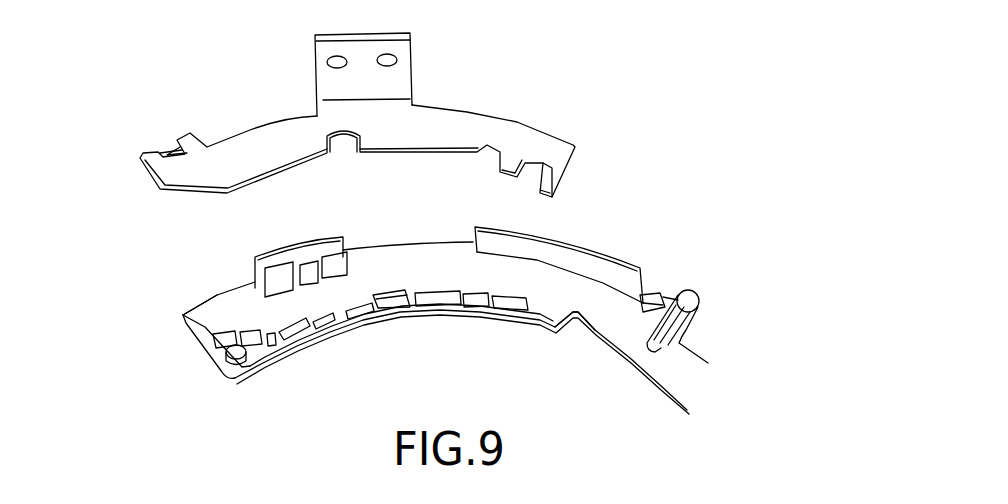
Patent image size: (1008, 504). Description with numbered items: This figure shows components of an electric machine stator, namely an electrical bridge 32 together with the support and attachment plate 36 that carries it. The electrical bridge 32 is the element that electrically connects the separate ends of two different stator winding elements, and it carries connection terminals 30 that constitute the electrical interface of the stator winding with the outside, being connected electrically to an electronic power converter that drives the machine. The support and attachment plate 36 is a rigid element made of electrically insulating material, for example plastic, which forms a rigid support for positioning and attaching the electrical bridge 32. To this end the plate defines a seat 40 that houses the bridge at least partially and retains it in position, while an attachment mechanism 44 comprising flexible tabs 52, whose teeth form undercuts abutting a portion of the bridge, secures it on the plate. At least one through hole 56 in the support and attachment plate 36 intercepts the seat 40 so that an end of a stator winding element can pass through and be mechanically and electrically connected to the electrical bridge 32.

The connection terminal 30 is at (323, 55).
The electrical bridge 32 is at (493, 137).
The support and attachment plate 36 is at (678, 377).
The seat 40 is at (400, 270).
The attachment mechanism 44 is at (250, 267).
The flexible tab 52 is at (613, 258).
The through hole 56 is at (203, 303).